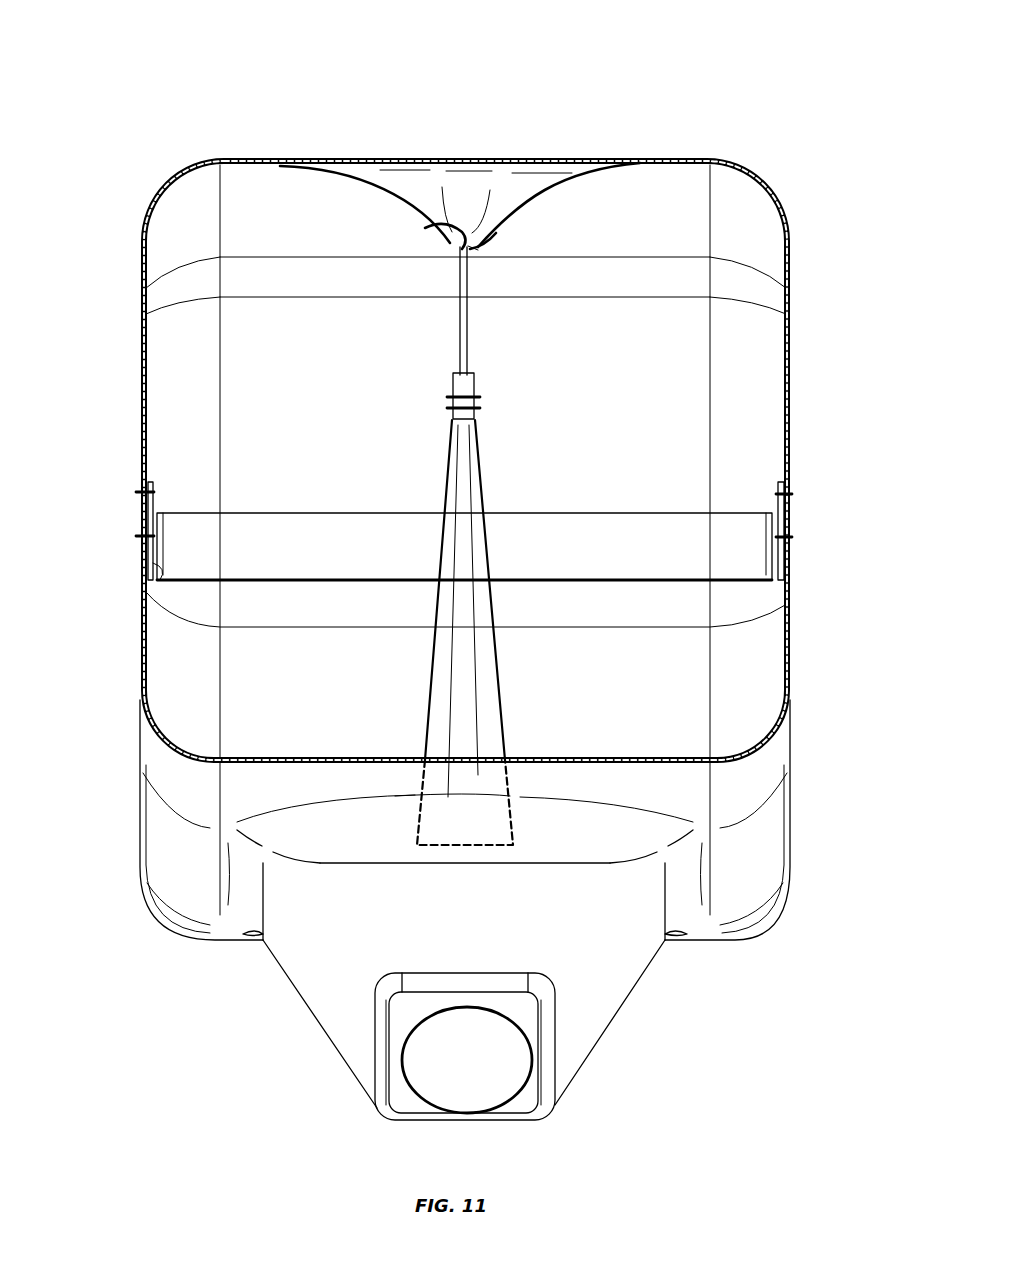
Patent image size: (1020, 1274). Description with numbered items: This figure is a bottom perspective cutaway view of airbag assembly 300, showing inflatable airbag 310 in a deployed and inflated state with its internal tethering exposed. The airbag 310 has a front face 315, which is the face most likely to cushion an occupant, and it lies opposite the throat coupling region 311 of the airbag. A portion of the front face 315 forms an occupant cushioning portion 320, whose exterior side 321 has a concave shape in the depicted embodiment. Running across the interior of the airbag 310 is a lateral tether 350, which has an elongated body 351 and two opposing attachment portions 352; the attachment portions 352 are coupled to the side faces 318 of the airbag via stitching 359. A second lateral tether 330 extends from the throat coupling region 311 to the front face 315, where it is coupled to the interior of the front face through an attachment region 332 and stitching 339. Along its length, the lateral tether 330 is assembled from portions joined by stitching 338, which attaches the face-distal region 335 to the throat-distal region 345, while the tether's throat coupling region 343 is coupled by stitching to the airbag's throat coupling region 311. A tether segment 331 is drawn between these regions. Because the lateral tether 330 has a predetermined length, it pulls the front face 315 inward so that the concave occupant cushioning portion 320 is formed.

The airbag assembly 300 is at (141, 70).
The inflatable airbag 310 is at (265, 140).
The throat coupling region 311 is at (625, 970).
The front face 315 is at (668, 158).
The side faces 318 is at (140, 345).
The occupant cushioning portion 320 is at (468, 186).
The exterior side 321 is at (532, 205).
The lateral tether 330 is at (533, 365).
The tube 331 is at (470, 325).
The attachment region 332 is at (498, 248).
The face-distal region 335 is at (460, 366).
The stitching 338 is at (450, 408).
The stitching 339 is at (446, 228).
The throat coupling region 343 is at (465, 715).
The throat-distal region 345 is at (455, 432).
The lateral tethers 350 is at (686, 534).
The elongated body 351 is at (645, 548).
The attachment portions 352 is at (780, 512).
The stitching 359 is at (138, 537).